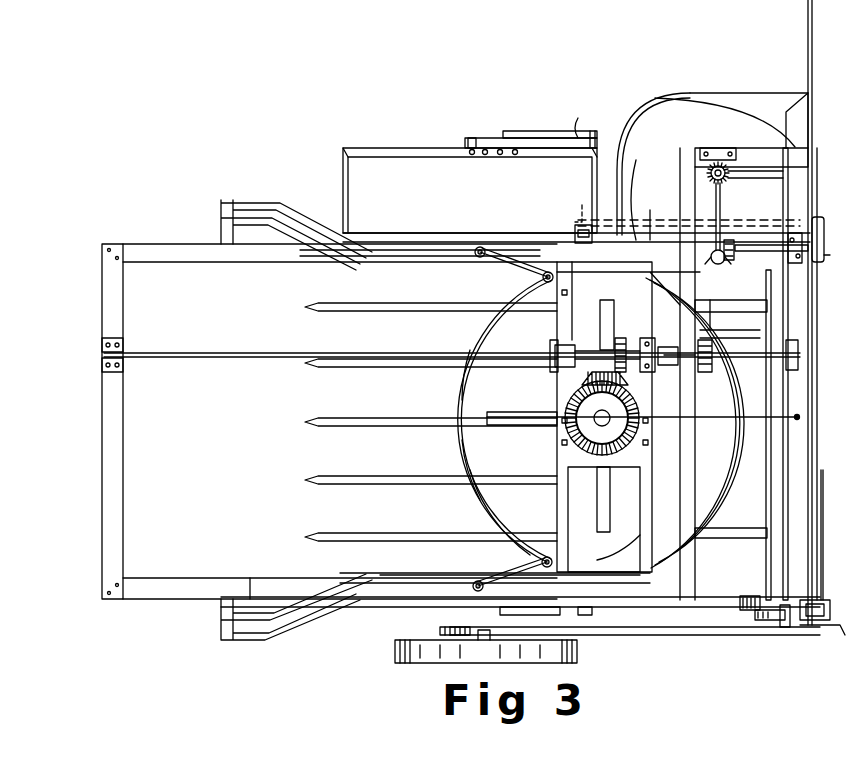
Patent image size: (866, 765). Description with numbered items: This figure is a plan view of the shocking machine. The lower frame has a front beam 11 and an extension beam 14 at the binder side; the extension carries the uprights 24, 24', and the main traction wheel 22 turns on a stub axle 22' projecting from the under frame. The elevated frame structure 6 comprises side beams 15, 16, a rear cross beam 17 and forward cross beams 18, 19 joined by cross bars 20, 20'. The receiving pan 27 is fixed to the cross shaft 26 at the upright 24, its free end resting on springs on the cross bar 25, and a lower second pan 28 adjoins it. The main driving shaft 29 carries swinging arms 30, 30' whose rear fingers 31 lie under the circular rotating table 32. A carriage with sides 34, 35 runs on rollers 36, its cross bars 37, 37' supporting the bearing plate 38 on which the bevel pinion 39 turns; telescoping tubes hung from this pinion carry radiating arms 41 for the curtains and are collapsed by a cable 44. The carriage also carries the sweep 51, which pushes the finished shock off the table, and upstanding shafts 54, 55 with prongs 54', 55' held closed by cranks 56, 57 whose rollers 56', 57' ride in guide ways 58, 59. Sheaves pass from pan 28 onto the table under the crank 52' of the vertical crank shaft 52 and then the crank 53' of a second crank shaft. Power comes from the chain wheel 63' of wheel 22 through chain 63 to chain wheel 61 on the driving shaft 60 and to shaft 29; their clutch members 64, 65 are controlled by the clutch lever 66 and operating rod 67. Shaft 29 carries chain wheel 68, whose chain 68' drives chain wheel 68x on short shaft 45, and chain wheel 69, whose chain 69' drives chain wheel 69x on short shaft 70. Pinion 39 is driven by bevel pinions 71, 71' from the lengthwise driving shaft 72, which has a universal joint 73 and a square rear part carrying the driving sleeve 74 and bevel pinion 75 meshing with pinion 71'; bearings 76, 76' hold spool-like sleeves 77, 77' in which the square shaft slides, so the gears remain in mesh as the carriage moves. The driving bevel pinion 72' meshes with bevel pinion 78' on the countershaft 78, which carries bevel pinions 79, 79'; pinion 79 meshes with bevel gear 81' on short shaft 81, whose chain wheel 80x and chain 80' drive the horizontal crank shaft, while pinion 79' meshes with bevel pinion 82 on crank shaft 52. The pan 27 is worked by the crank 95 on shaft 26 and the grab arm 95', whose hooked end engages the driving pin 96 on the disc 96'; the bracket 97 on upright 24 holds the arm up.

The top frame structure 6 is at (256, 590).
The front beam 11 is at (806, 115).
The extension beam 14 is at (790, 96).
The side beam 15 is at (178, 244).
The side beam 16 is at (184, 600).
The rear connecting cross beam 17 is at (104, 432).
The forward cross beam 18 is at (697, 422).
The front cross member 19 is at (818, 478).
The cross bar 20 is at (813, 374).
The cross bar 20' is at (776, 143).
The main traction wheel 22 is at (470, 664).
The stub axle 22' is at (470, 646).
The upright 24 is at (570, 169).
The upright 24' is at (352, 134).
The cross bar 25 is at (345, 200).
The cross shaft 26 is at (578, 150).
The receiving pan 27 is at (425, 170).
The second pan 28 is at (692, 105).
The main driving shaft 29 is at (775, 455).
The swinging arm 30 is at (731, 295).
The swinging arm 30' is at (731, 523).
The fingers 31 is at (330, 426).
The rotating table 32 is at (470, 500).
The carriage side 34 is at (592, 577).
The carriage side 35 is at (613, 270).
The rollers 36 is at (628, 575).
The cross bar 37 is at (579, 519).
The cross bar 37' is at (618, 547).
The bearing plate 38 is at (566, 462).
The bevel pinion 39 is at (568, 437).
The radiating arms 41 is at (612, 507).
The cable 44 is at (658, 432).
The short shaft 45 is at (578, 612).
The sweep 51 is at (740, 438).
The crank shaft 52 is at (694, 159).
The crank 52' is at (791, 182).
The crank 53' is at (640, 219).
The shaft 54 is at (526, 417).
The prong 54' is at (485, 375).
The shaft 55 is at (540, 539).
The prong 55' is at (488, 470).
The crank 56 is at (515, 245).
The roller 56' is at (487, 230).
The crank 57 is at (511, 590).
The roller 57' is at (467, 569).
The guide way 58 is at (434, 250).
The guide way 59 is at (412, 594).
The driving shaft 60 is at (823, 590).
The chain wheel 61 is at (838, 636).
The chain 63 is at (635, 643).
The chain wheel 63' is at (447, 621).
The clutch member 64 is at (828, 615).
The clutch member 65 is at (758, 620).
The clutch lever 66 is at (788, 627).
The operating rod 67 is at (814, 506).
The chain wheel 68 is at (733, 612).
The chain 68' is at (520, 614).
The chain wheel 68x is at (592, 612).
The chain wheel 69 is at (689, 206).
The chain 69' is at (640, 200).
The chain wheel 69x is at (580, 212).
The short shaft 70 is at (592, 222).
The bevel pinion 71 is at (628, 387).
The bevel pinion 71' is at (606, 340).
The driving shaft 72 is at (452, 343).
The driving bevel pinion 72' is at (755, 367).
The universal joint 73 is at (672, 362).
The driving sleeve 74 is at (615, 348).
The bevel pinion 75 is at (628, 348).
The bearing 76 is at (546, 371).
The bearing 76' is at (658, 340).
The spool-like sleeve 77 is at (555, 365).
The spool-like sleeve 77' is at (672, 345).
The countershaft 78 is at (628, 285).
The bevel pinion 78' is at (734, 319).
The bevel pinion 79 is at (692, 255).
The bevel pinion 79' is at (686, 214).
The chain 80' is at (835, 237).
The chain wheel 80x is at (826, 254).
The short shaft 81 is at (772, 234).
The bevel gear 81' is at (741, 231).
The bevel pinion 82 is at (724, 168).
The crank 95 is at (597, 127).
The grab arm 95' is at (550, 121).
The driving pin 96 is at (479, 127).
The disc 96' is at (504, 125).
The bracket 97 is at (578, 132).